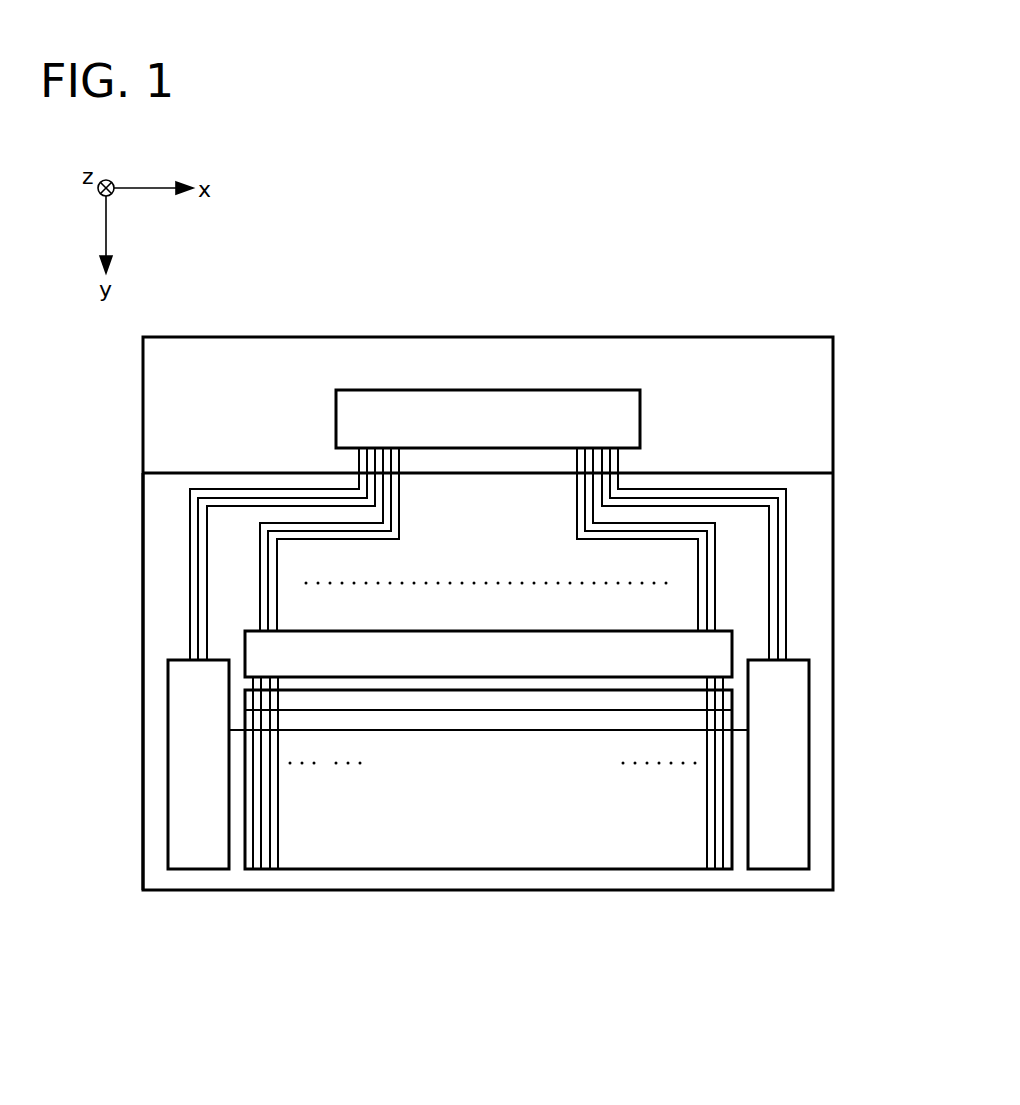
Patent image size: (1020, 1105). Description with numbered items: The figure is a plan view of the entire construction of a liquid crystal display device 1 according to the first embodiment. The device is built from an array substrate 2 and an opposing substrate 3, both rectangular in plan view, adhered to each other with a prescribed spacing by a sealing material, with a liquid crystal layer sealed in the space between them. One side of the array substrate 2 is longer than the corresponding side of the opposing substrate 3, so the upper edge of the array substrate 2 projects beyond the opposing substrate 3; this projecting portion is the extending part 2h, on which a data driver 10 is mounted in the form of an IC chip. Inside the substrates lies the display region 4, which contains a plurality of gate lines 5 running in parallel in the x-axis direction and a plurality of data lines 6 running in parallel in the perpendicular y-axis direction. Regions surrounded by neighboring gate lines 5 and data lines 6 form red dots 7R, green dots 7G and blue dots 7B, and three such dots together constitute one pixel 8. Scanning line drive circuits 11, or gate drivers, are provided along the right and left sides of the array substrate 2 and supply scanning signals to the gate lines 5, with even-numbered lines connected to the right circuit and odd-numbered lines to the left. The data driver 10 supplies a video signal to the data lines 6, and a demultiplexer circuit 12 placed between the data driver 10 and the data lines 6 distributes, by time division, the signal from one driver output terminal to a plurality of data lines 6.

The liquid crystal display device 1 is at (497, 242).
The array substrate 2 is at (132, 337).
The extending part 2h is at (703, 360).
The opposing substrate 3 is at (842, 473).
The display region 4 is at (478, 847).
The gate lines 5 is at (584, 730).
The data lines 6 is at (707, 823).
The red dots 7R is at (253, 722).
The green dots 7G is at (262, 720).
The blue dots 7B is at (278, 720).
The pixel 8 is at (289, 856).
The data driver 10 is at (400, 405).
The scanning line drive circuits 11 is at (198, 869).
The demultiplexer circuit 12 is at (490, 631).